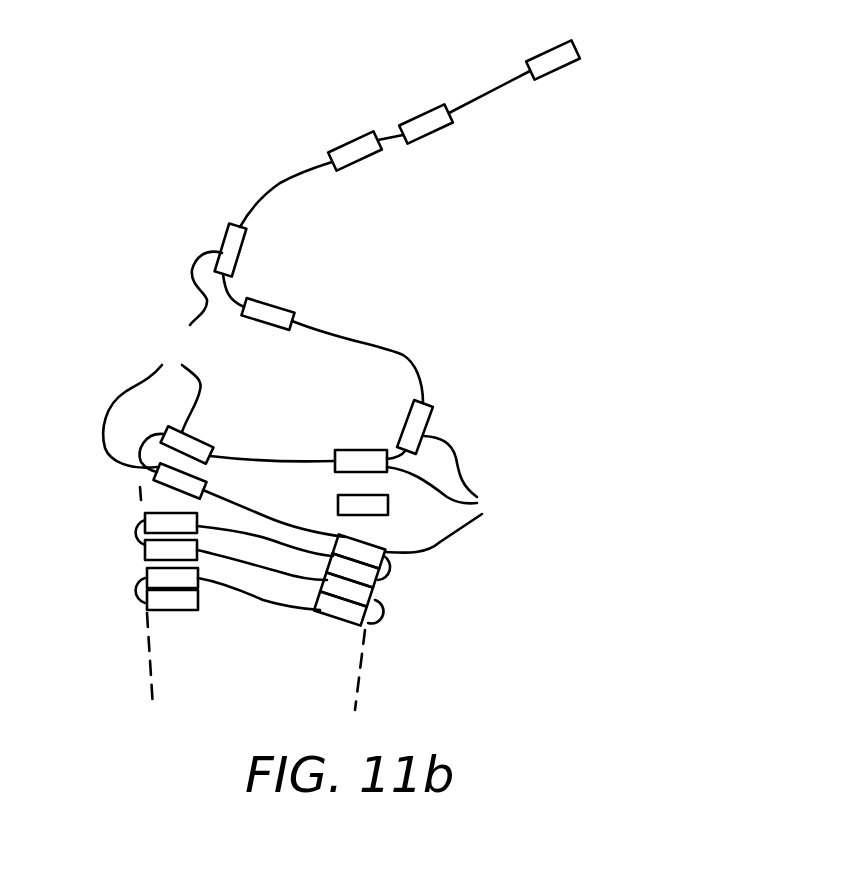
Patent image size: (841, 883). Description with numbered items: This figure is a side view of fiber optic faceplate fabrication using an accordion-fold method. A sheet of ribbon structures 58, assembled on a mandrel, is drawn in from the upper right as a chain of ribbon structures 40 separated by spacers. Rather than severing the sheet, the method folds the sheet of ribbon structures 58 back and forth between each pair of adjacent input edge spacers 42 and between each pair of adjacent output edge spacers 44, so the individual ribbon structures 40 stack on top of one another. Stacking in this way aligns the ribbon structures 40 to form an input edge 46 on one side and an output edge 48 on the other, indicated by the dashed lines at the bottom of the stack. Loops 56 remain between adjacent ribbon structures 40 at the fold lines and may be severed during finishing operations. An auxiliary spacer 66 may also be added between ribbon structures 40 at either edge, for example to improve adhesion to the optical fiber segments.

The ribbon structures 40 is at (243, 537).
The input edge spacers 42 is at (405, 437).
The output edge spacers 44 is at (258, 324).
The input edge 46 is at (365, 658).
The output edge 48 is at (147, 647).
The loops 56 is at (383, 613).
The sheet of ribbon structures 58 is at (278, 183).
The auxiliary spacer 66 is at (338, 510).